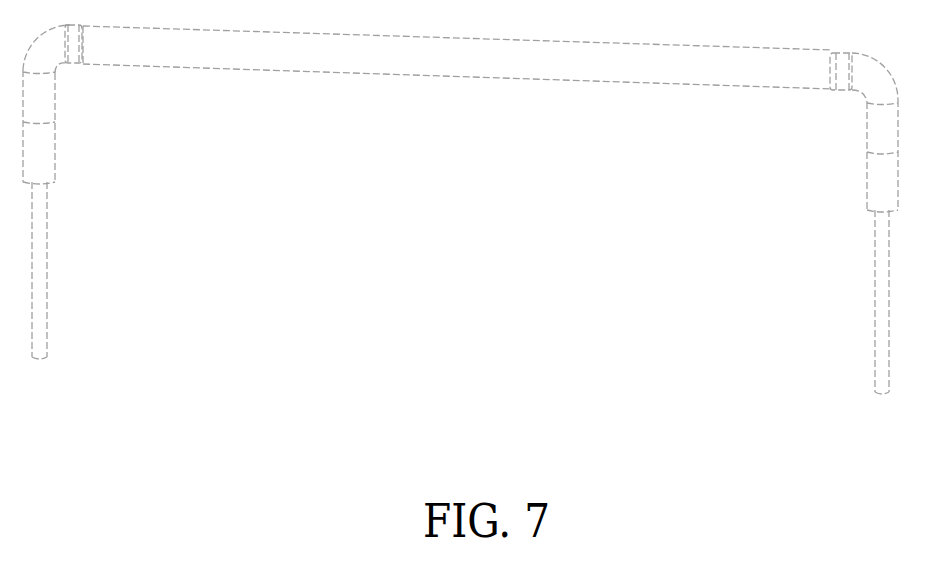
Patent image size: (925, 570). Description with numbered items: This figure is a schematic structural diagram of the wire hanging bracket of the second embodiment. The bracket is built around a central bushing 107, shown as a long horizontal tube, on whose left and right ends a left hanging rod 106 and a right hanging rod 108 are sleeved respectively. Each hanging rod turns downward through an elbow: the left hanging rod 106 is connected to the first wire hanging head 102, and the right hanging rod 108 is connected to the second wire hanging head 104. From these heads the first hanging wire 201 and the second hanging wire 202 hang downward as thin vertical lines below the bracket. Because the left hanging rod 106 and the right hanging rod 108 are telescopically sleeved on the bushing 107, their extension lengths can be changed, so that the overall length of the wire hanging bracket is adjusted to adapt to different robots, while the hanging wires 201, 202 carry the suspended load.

The first wire hanging head 102 is at (51, 60).
The second wire hanging head 104 is at (875, 180).
The left hanging rod 106 is at (58, 73).
The bushing 107 is at (607, 67).
The right hanging rod 108 is at (875, 82).
The first hanging wire 201 is at (40, 257).
The second hanging wire 202 is at (883, 280).